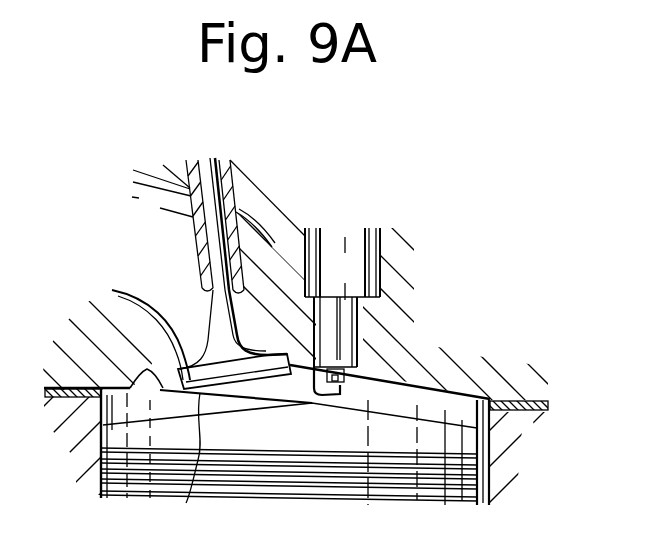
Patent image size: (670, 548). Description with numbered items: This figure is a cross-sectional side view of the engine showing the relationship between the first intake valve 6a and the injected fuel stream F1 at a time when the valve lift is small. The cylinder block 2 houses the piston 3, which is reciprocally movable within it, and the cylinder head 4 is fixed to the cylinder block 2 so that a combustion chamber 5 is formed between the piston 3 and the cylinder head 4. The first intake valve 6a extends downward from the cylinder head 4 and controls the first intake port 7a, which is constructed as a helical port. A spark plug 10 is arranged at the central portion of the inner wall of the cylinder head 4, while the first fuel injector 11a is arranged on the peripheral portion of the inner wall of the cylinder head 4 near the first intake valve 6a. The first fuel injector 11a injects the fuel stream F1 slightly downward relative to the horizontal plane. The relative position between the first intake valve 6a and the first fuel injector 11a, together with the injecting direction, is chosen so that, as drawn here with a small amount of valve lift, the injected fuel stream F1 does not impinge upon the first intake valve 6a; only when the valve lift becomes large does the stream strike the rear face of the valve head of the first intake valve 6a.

The cylinder block 2 is at (505, 468).
The piston 3 is at (437, 506).
The cylinder head 4 is at (463, 370).
The combustion chamber 5 is at (100, 424).
The first intake valve 6a is at (288, 352).
The first intake port 7a is at (158, 198).
The spark plug 10 is at (347, 254).
The first fuel injector 11a is at (85, 320).
The injected fuel stream F1 is at (185, 469).